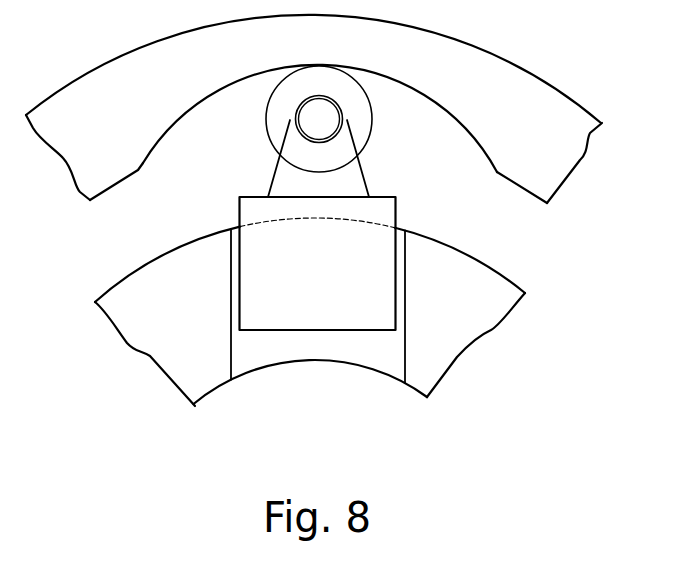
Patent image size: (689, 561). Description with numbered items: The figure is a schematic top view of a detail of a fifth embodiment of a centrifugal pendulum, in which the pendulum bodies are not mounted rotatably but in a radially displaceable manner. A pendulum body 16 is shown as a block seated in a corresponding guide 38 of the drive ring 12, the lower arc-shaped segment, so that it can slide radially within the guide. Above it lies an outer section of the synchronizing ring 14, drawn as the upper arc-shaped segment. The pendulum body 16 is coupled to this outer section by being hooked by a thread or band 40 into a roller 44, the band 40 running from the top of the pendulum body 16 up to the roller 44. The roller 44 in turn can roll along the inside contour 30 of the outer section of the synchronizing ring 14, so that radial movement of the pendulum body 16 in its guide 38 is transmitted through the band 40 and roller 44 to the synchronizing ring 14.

The drive ring 12 is at (472, 325).
The synchronizing ring 14 is at (351, 111).
The pendulum body 16 is at (332, 300).
The inside contour 30 is at (444, 114).
The guide 38 is at (290, 348).
The thread or band 40 is at (268, 163).
The roller 44 is at (272, 122).